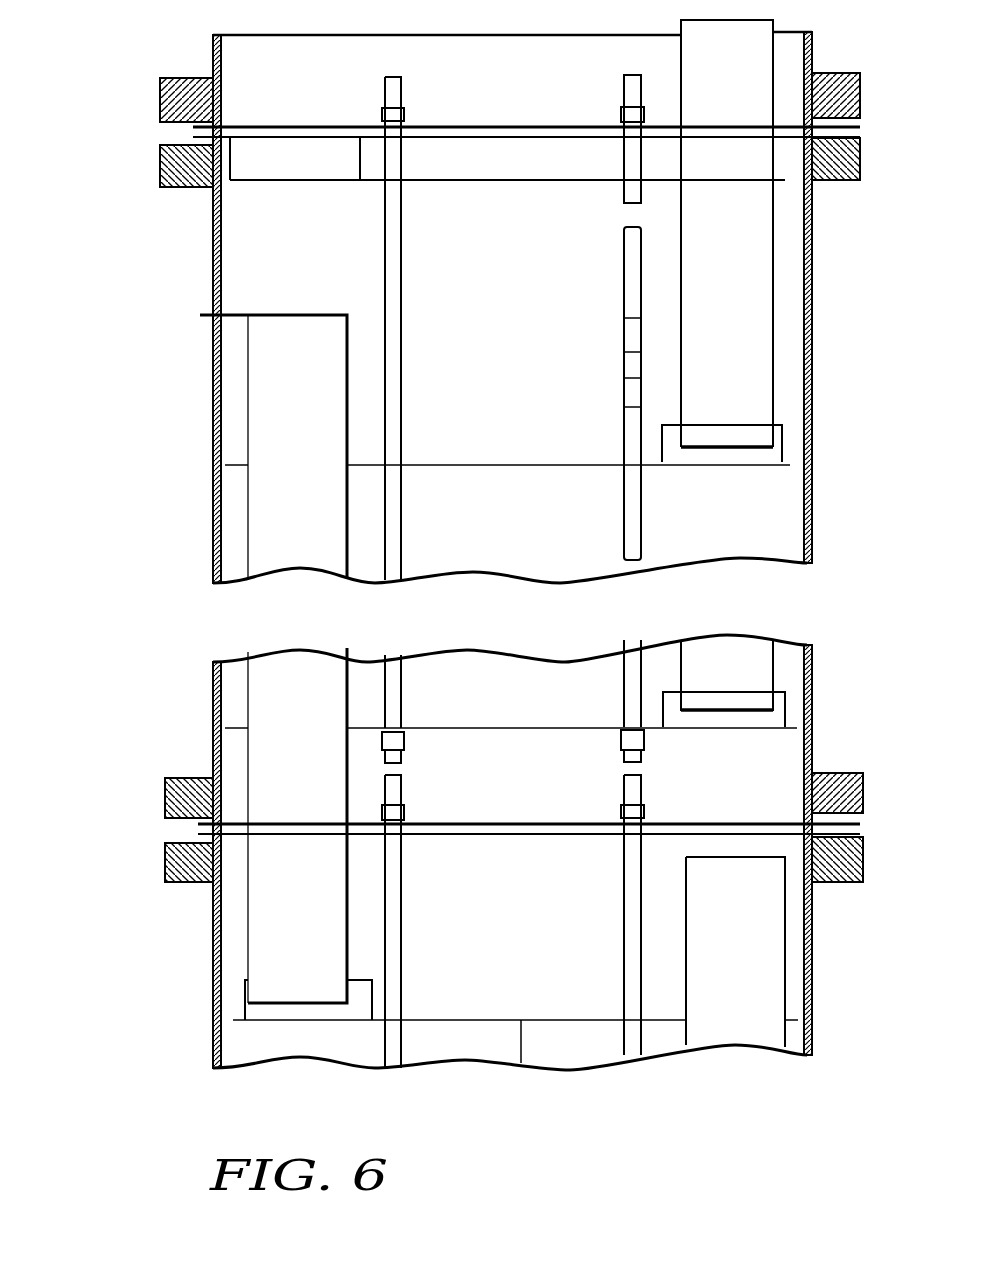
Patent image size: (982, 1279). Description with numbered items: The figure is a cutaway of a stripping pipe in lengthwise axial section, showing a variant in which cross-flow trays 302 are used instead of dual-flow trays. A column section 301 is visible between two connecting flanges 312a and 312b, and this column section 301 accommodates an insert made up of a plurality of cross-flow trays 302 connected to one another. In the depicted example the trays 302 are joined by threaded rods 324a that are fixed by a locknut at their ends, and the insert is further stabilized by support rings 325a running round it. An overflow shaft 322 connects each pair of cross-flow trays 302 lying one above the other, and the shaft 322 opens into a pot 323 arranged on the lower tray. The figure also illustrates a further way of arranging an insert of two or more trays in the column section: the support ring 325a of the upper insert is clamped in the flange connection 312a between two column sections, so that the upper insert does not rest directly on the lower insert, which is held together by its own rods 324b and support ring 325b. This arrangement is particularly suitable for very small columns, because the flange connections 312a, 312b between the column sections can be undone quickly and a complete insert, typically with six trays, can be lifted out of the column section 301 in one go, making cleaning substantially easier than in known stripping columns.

The column section 301 is at (812, 327).
The cross-flow tray 302 is at (537, 181).
The connecting flange 312a is at (143, 130).
The connecting flange 312b is at (145, 828).
The overflow shaft 322 is at (757, 237).
The pot 323 is at (727, 455).
The threaded rod 324a is at (385, 246).
The threaded rod 324b is at (390, 1044).
The support ring 325a is at (478, 127).
The support ring 325b is at (472, 827).